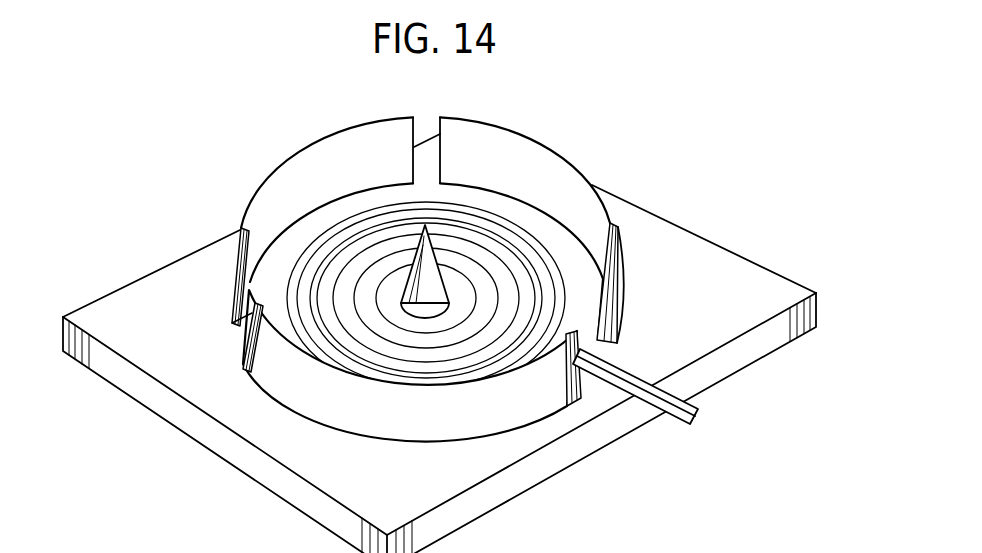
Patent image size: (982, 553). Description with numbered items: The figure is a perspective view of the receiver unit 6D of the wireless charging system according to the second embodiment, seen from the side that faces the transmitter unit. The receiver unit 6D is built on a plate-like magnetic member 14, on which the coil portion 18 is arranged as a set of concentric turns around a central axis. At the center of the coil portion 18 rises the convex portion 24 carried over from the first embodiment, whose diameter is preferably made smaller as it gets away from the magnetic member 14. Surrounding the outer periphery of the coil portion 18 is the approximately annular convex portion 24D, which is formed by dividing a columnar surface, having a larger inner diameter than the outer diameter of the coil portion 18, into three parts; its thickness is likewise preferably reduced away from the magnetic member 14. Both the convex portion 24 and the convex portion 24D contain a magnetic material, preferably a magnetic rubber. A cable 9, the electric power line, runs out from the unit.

The receiver unit 6D is at (439, 319).
The magnetic member 14 is at (175, 264).
The convex portion 24 is at (429, 264).
The annular convex portion 24D is at (572, 180).
The coil portion 18 is at (488, 225).
The cable 9 is at (665, 423).